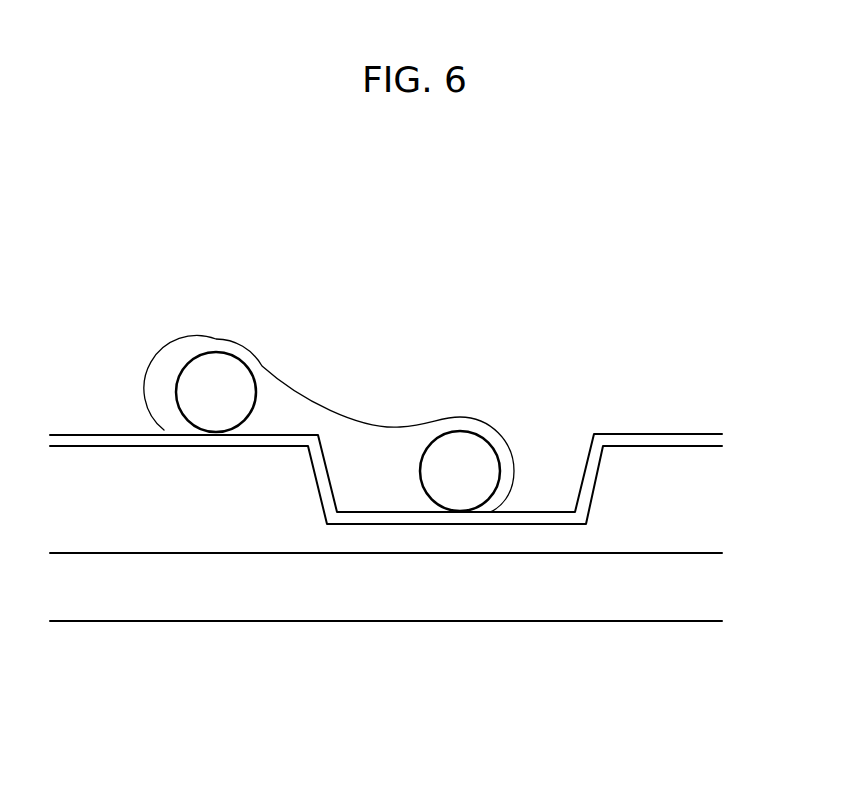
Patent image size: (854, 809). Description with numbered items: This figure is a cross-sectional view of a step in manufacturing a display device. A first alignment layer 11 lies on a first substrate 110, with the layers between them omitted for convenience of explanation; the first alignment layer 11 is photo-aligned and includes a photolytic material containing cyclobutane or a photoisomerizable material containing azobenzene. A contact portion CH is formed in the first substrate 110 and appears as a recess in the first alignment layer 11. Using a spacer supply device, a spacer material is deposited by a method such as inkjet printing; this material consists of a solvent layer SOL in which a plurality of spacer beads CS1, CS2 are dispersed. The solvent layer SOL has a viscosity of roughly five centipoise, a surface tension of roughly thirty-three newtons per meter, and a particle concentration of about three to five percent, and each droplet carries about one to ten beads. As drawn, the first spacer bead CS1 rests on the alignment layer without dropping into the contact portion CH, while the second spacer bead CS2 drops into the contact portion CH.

The first alignment layer 11 is at (655, 440).
The first substrate 110 is at (640, 588).
The first spacer bead CS1 is at (215, 370).
The second spacer bead CS2 is at (468, 458).
The solvent layer SOL is at (362, 452).
The contact portion CH is at (521, 500).